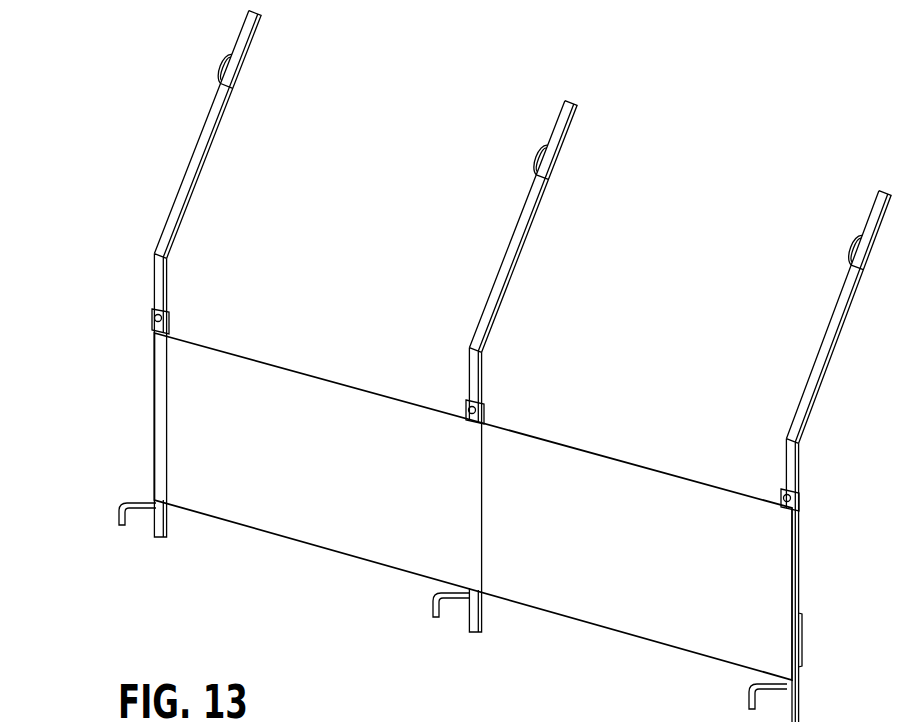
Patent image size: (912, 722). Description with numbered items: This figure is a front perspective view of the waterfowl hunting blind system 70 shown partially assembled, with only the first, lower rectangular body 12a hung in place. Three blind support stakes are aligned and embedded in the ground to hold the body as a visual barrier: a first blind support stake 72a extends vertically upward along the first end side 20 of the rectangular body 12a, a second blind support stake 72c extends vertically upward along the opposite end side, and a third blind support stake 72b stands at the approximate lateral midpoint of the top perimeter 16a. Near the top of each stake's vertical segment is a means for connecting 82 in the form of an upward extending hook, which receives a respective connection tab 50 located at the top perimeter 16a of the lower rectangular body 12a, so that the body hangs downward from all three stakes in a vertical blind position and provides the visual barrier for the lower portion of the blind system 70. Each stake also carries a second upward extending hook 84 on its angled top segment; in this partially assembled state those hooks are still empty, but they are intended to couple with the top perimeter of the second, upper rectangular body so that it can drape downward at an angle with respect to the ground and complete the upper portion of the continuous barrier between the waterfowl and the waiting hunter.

The first end side 20 is at (152, 447).
The top perimeter 16a is at (298, 372).
The first, lower rectangular body 12a is at (145, 398).
The means for connecting 82 is at (145, 313).
The connection tab 50 is at (168, 313).
The second upward extending hook 84 is at (380, 721).
The waterfowl hunting blind system 70 is at (138, 188).
The first blind support stake 72a is at (190, 125).
The third blind support stake 72b is at (500, 228).
The second blind support stake 72c is at (828, 305).